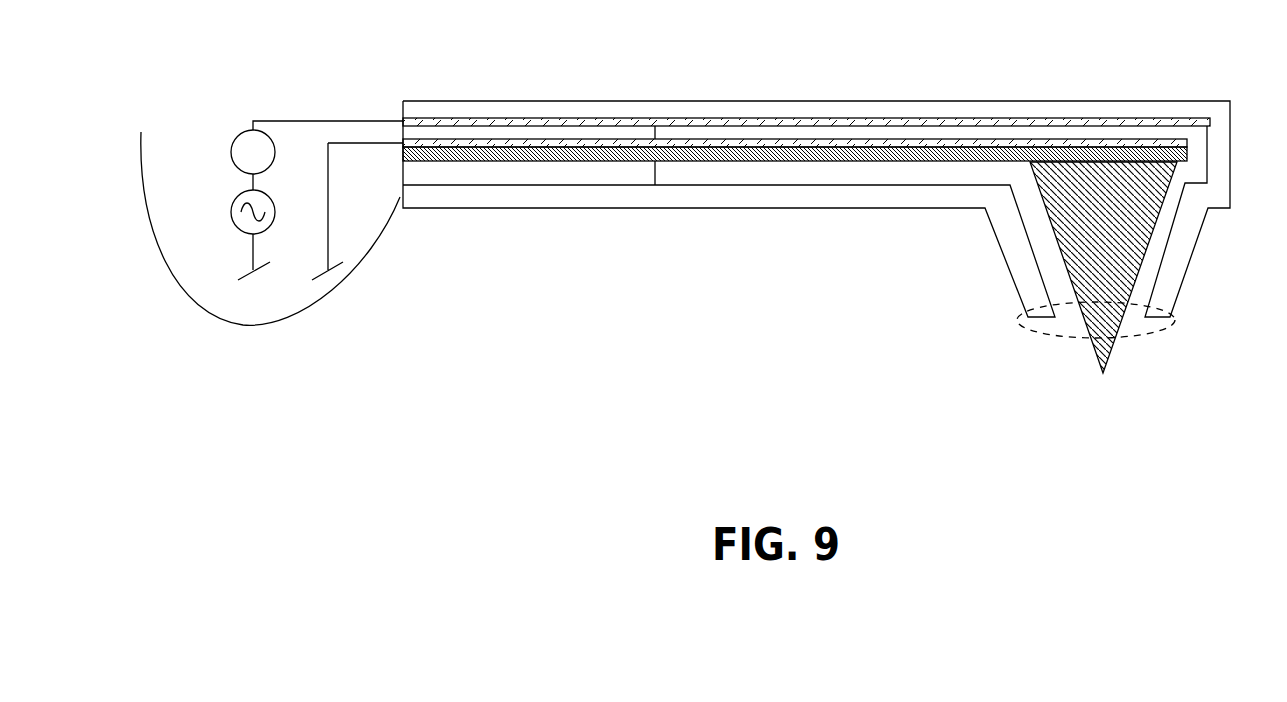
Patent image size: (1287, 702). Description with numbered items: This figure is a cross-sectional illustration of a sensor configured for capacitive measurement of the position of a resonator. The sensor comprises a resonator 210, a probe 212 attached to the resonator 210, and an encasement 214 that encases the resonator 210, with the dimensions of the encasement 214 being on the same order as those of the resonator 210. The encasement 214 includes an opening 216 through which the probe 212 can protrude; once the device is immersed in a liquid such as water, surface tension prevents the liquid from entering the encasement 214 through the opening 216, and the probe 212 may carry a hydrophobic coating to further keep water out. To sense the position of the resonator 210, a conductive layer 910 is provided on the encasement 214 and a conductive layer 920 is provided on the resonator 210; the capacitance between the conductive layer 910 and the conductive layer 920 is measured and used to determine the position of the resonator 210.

The resonator 210 is at (752, 161).
The probe 212 is at (1150, 230).
The encasement 214 is at (400, 108).
The opening 216 is at (1123, 337).
The conductive layer 910 is at (730, 120).
The conductive layer 920 is at (1058, 142).